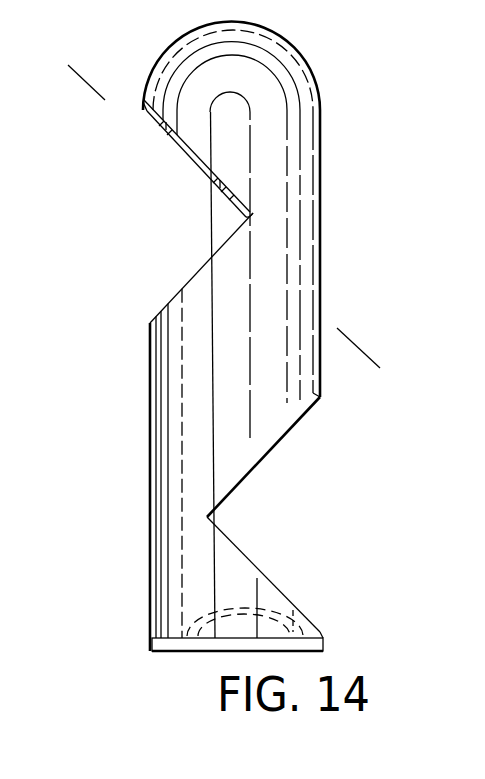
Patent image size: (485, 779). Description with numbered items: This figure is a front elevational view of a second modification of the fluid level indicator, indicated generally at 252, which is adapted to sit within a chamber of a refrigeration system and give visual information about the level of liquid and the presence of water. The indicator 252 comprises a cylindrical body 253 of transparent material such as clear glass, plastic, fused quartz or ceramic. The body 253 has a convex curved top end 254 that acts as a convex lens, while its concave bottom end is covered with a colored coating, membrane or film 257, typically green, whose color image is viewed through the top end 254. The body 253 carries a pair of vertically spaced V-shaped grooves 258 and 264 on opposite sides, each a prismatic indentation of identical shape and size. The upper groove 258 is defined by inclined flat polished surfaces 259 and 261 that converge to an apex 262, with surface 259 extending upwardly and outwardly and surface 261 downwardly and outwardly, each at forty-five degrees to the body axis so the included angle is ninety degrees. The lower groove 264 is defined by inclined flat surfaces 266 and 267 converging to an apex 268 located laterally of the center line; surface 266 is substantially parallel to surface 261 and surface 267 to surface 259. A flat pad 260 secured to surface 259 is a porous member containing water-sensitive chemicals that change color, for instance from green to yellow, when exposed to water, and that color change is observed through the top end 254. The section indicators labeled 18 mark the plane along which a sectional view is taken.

The liquid level indicator 252 is at (136, 41).
The convex curved top end 254 is at (277, 33).
The inclined flat polished surface 259 is at (147, 110).
The flat pad 260 is at (193, 167).
The apex 262 is at (253, 213).
The V-shaped groove 258 is at (197, 212).
The inclined flat polished surface 261 is at (172, 301).
The cylindrical body 253 is at (173, 425).
The inclined flat surface 266 is at (262, 455).
The V-shaped groove 264 is at (260, 517).
The apex 268 is at (207, 517).
The inclined flat surface 267 is at (275, 587).
The color coating, membrane or film 257 is at (208, 647).
The section line 18- 18 is at (62, 74).